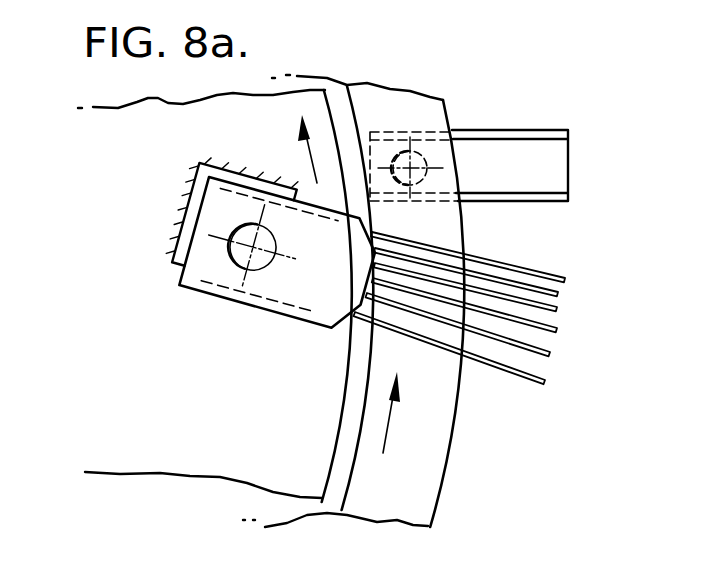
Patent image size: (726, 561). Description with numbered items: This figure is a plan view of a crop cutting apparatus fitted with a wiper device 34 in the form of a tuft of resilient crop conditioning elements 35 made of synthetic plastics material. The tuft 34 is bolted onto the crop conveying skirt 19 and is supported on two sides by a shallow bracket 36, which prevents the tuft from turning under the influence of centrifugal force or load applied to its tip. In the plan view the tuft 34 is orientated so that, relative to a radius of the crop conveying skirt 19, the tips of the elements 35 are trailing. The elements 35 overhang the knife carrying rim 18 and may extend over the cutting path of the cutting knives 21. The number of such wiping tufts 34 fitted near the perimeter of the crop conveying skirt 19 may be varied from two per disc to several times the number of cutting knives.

The knife carrying rim 18 is at (428, 462).
The crop conveying skirt 19 is at (162, 343).
The cutting knife 21 is at (504, 128).
The wiper device 34 is at (294, 346).
The crop conditioning elements 35 is at (520, 380).
The shallow bracket 36 is at (190, 203).